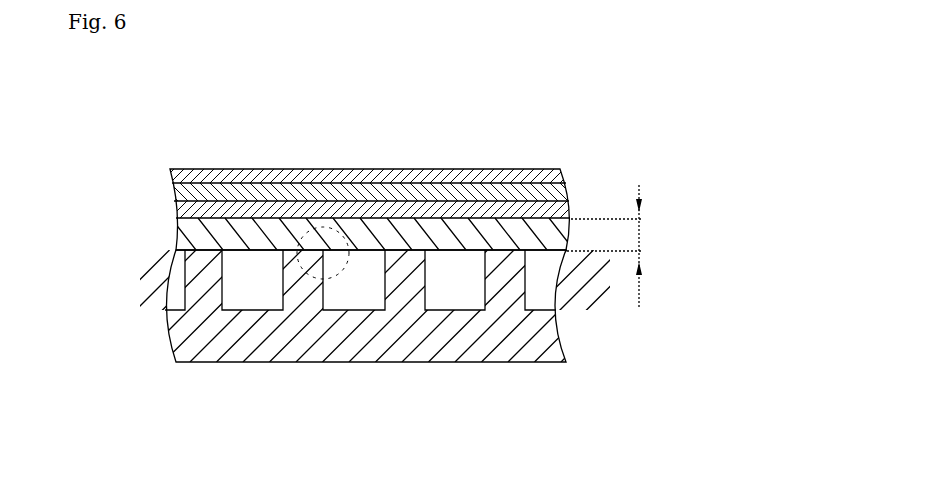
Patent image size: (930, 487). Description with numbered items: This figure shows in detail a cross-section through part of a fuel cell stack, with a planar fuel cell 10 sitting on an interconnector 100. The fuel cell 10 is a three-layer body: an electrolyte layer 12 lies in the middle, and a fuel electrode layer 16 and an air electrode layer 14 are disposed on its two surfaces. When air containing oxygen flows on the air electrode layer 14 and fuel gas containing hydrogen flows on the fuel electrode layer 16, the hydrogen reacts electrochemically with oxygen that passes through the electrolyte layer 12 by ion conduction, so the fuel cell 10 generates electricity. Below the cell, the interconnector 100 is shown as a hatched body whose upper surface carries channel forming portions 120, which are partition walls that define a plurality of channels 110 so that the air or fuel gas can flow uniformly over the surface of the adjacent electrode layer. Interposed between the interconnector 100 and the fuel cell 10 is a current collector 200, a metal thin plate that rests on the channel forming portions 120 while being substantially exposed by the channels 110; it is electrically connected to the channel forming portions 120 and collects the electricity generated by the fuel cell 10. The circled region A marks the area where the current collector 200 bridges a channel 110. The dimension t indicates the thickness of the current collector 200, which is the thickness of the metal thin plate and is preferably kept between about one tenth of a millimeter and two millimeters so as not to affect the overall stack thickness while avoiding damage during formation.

The fuel cell 10 is at (178, 148).
The fuel electrode layer 16 is at (170, 178).
The electrolyte layer 12 is at (173, 192).
The air electrode layer 14 is at (172, 217).
The current collector 200 is at (406, 232).
The interconnector 100 is at (460, 347).
The channel 110 is at (265, 292).
The channel forming portion 120 is at (513, 290).
The region A is at (338, 274).
The thickness t is at (604, 246).